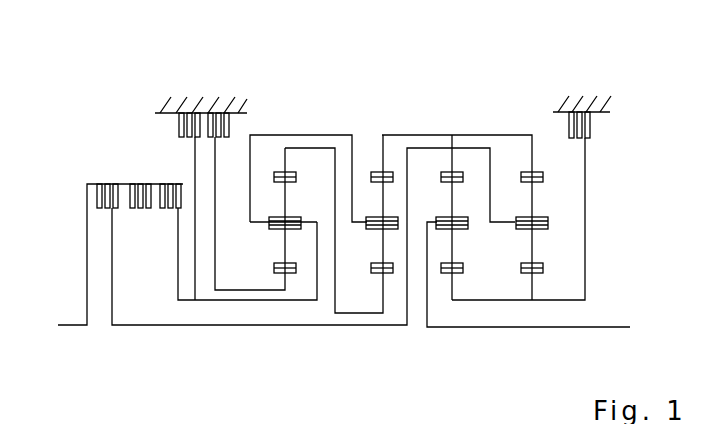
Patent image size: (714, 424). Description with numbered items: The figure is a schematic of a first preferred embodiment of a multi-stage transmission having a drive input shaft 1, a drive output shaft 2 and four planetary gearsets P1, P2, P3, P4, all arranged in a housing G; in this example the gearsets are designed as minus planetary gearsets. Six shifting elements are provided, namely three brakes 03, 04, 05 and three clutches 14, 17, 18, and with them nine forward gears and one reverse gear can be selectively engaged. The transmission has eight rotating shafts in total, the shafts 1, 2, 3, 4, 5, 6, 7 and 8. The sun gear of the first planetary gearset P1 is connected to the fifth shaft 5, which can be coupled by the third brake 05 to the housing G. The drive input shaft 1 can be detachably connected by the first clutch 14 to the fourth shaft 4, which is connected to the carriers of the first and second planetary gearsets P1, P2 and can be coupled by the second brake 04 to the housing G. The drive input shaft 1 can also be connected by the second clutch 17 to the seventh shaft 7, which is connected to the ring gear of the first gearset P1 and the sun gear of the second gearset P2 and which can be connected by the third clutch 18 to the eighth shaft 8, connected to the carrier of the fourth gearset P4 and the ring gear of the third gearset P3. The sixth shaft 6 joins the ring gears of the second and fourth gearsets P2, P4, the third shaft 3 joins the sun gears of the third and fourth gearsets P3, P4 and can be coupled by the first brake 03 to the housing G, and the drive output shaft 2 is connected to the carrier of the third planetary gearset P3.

The drive input shaft 1 is at (68, 330).
The drive output shaft 2 is at (427, 230).
The third shaft 3 is at (450, 285).
The fourth shaft 4 is at (178, 292).
The fifth shaft 5 is at (289, 291).
The sixth shaft 6 is at (405, 133).
The seventh shaft 7 is at (320, 147).
The eighth shaft 8 is at (482, 148).
The first clutch 14 is at (162, 184).
The second clutch 17 is at (132, 184).
The third clutch 18 is at (97, 184).
The first brake 03 is at (592, 125).
The second brake 04 is at (177, 113).
The third brake 05 is at (208, 113).
The housing G is at (222, 98).
The first planetary gearset P1 is at (285, 128).
The second planetary gearset P2 is at (382, 128).
The third planetary gearset P3 is at (452, 128).
The fourth planetary gearset P4 is at (532, 128).